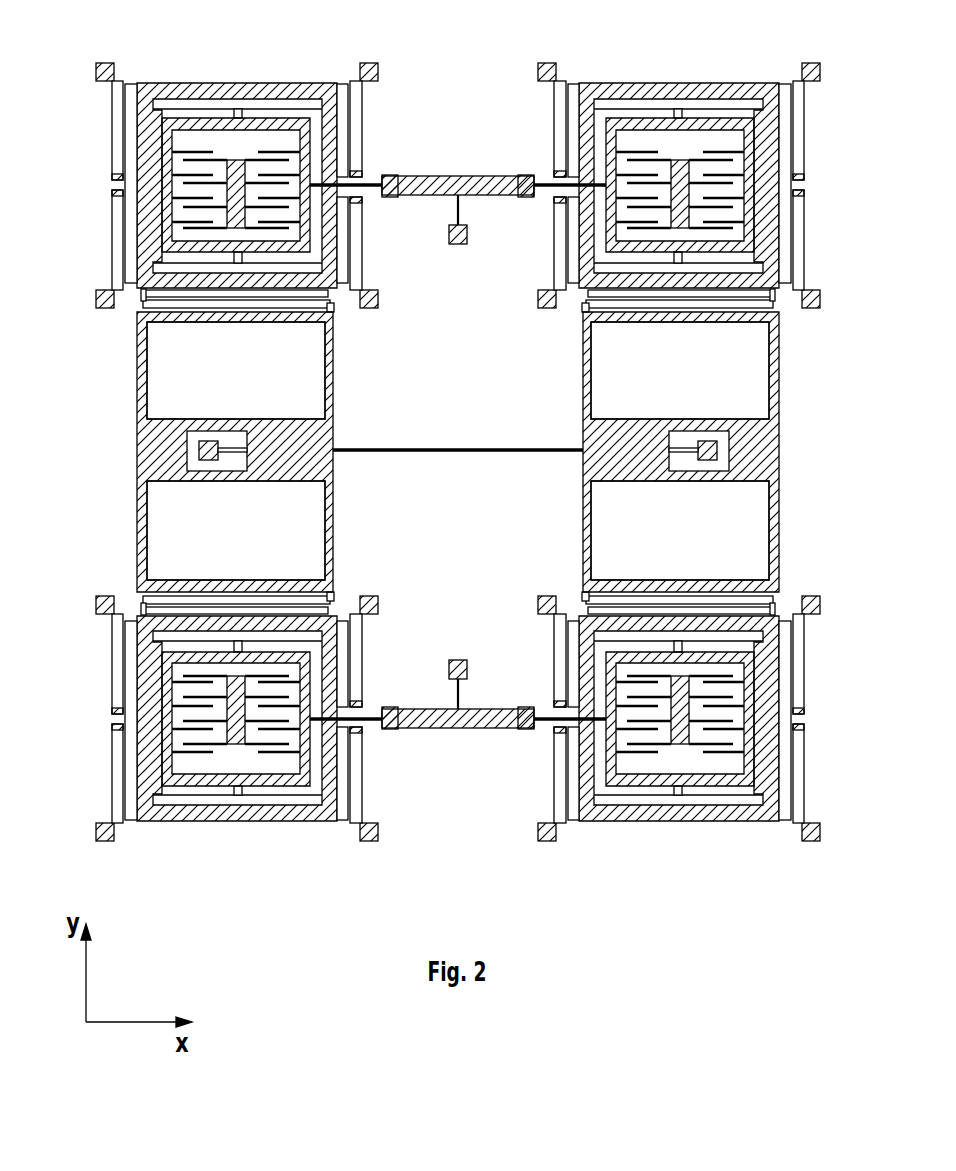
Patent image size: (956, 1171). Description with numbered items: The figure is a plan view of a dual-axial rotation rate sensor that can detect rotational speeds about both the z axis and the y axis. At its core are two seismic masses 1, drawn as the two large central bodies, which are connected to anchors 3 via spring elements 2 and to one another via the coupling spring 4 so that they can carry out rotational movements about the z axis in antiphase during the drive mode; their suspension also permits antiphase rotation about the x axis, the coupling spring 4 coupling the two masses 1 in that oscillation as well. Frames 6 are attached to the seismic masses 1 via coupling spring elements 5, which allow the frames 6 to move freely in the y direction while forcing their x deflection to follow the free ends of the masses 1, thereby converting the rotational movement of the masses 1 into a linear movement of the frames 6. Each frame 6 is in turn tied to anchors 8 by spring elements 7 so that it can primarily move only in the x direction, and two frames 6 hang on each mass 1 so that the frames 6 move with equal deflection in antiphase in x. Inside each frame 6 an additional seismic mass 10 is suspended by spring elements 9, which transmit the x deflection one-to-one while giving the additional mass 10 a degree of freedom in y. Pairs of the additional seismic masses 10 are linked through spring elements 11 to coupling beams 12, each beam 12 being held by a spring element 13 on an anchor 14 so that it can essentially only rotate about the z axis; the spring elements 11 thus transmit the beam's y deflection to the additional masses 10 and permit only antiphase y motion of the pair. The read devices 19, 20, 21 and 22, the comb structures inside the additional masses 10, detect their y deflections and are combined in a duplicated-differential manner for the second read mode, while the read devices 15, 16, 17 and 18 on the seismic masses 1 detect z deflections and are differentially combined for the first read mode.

The seismic mass 1 is at (152, 437).
The spring element 2 is at (238, 448).
The anchor 3 is at (198, 452).
The coupling spring 4 is at (460, 446).
The coupling spring element 5 is at (150, 300).
The frame 6 is at (203, 88).
The spring element 7 is at (124, 265).
The anchor 8 is at (96, 300).
The spring element 9 is at (162, 256).
The additional seismic mass 10 is at (168, 147).
The spring element 11 is at (337, 224).
The coupling beam 12 is at (479, 182).
The spring element 13 is at (456, 212).
The anchor 14 is at (452, 244).
The read device 15 is at (738, 391).
The read device 16 is at (178, 391).
The read device 17 is at (738, 513).
The read device 18 is at (178, 513).
The read device 19 is at (676, 160).
The read device 20 is at (240, 160).
The read device 21 is at (681, 742).
The read device 22 is at (235, 742).